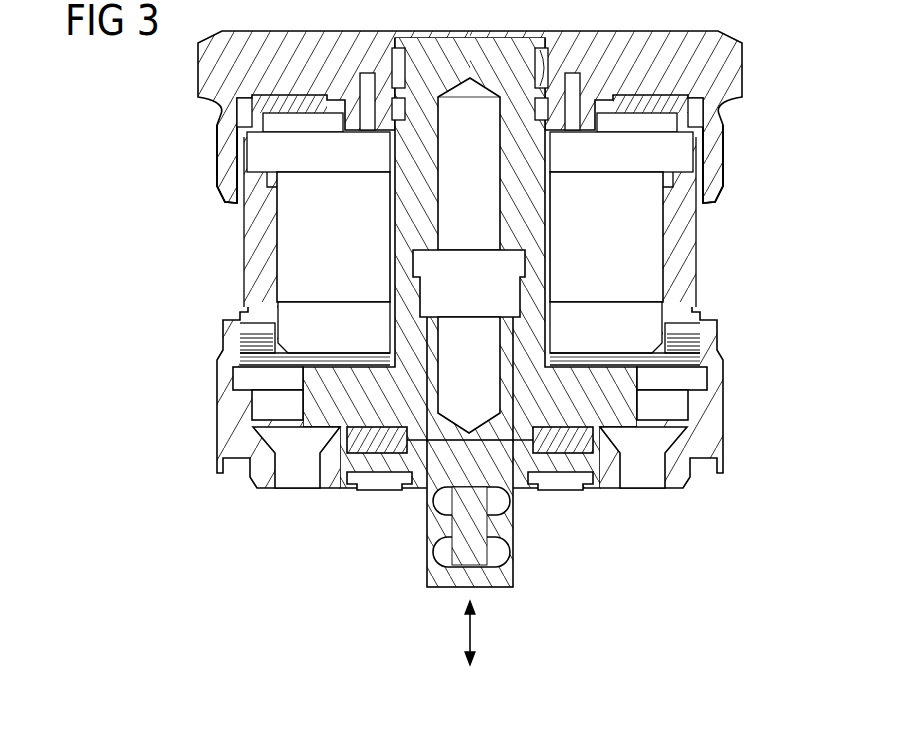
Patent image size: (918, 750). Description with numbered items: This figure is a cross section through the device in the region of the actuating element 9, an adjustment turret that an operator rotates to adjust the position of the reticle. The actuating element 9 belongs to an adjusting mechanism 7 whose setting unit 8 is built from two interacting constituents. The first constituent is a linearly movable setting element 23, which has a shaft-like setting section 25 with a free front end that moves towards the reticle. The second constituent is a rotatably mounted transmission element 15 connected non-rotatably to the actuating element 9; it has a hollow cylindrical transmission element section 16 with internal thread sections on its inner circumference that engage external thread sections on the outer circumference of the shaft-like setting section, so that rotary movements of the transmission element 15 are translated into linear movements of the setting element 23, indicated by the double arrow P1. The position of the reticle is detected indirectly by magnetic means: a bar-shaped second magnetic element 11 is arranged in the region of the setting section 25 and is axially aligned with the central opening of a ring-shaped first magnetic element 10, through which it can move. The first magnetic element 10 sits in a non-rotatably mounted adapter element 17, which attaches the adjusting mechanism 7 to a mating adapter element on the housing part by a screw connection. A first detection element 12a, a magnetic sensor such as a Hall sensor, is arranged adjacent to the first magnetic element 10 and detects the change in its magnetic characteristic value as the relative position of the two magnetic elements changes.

The actuating element 9 is at (728, 57).
The adjusting mechanism 7 is at (207, 287).
The setting unit 8 is at (470, 164).
The transmission element 15 is at (540, 192).
The hollow cylindrical transmission element section 16 is at (522, 384).
The adapter element 17 is at (713, 442).
The first magnetic element 10 is at (577, 442).
The setting element 23 is at (448, 460).
The first detection element 12a is at (551, 488).
The setting section 25 is at (507, 573).
The second magnetic element 11 is at (457, 547).
The double arrow P1 is at (472, 630).